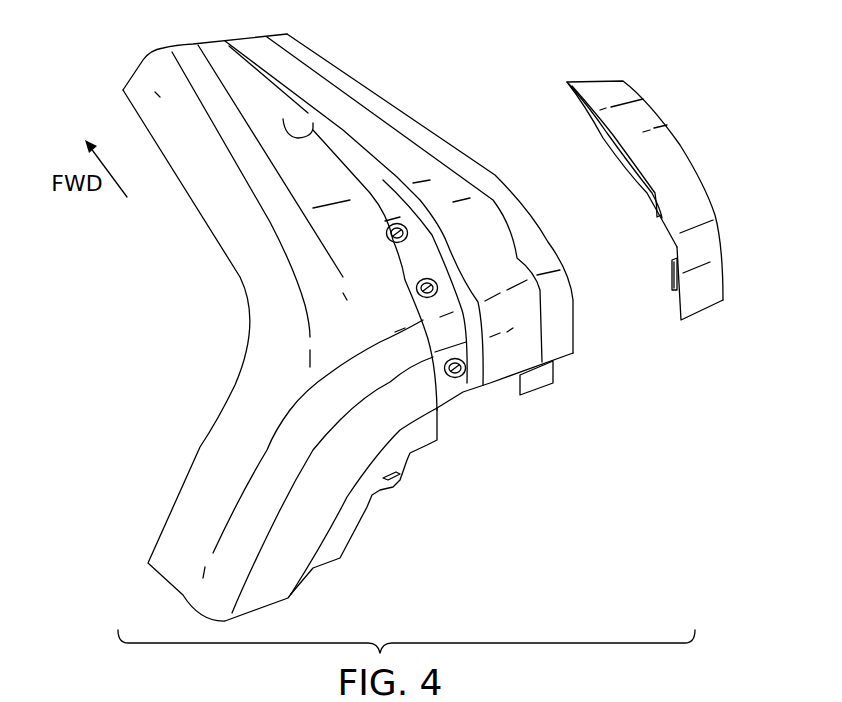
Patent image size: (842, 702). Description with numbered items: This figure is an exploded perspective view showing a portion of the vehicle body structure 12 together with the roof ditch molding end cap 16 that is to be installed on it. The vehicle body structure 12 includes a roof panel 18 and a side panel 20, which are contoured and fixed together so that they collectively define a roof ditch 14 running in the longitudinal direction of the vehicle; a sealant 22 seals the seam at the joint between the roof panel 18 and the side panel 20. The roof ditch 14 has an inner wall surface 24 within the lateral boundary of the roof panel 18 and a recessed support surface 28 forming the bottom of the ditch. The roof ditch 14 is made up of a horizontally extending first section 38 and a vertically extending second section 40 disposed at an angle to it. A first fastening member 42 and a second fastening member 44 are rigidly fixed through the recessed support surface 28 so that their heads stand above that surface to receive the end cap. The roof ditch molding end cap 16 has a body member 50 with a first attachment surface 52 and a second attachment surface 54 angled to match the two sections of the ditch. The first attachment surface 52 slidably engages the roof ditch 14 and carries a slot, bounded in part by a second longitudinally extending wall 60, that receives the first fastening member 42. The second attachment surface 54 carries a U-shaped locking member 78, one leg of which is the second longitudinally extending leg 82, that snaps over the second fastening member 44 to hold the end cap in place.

The vehicle body structure 12 is at (236, 366).
The roof ditch 14 is at (334, 115).
The roof ditch molding end cap 16 is at (714, 187).
The roof panel 18 is at (432, 140).
The side panel 20 is at (225, 210).
The sealant 22 is at (245, 72).
The inner wall surface 24 is at (378, 175).
The recessed support surface 28 is at (342, 170).
The first section 38 is at (393, 265).
The second section 40 is at (433, 378).
The first fastening member 42 is at (407, 238).
The second fastening member 44 is at (458, 378).
The body member 50 is at (684, 142).
The first attachment surface 52 is at (612, 145).
The second attachment surface 54 is at (675, 303).
The second longitudinally extending wall 60 is at (637, 193).
The locking member 78 is at (660, 263).
The second longitudinally extending leg 82 is at (672, 280).